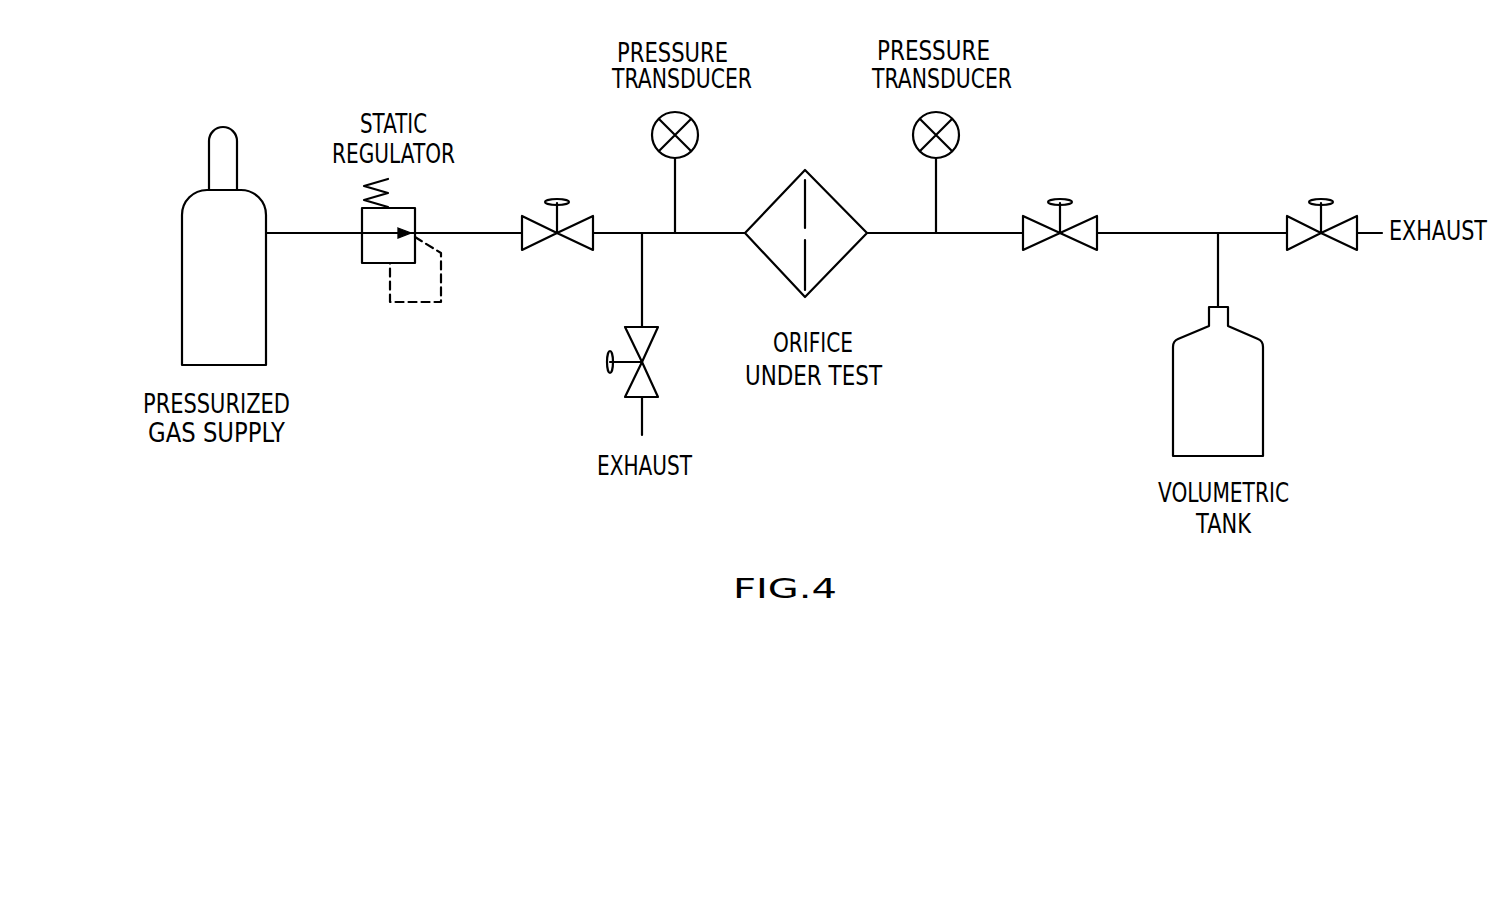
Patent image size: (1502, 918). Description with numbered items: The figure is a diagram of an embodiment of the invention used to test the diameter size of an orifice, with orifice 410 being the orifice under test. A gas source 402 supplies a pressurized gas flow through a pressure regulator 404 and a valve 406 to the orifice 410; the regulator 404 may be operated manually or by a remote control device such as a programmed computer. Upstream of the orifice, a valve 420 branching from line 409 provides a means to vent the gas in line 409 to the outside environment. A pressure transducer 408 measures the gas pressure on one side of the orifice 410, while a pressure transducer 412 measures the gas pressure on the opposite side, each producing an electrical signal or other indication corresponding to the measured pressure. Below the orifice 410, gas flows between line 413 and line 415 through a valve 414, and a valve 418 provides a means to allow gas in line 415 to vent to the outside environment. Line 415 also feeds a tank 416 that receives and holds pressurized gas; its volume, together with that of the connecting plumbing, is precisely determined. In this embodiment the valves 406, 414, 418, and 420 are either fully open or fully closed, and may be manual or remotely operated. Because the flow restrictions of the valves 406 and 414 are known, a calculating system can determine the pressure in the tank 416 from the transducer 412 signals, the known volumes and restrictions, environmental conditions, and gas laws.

The gas source 402 is at (248, 187).
The pressure regulator 404 is at (417, 223).
The valve 406 is at (550, 197).
The pressure transducer 408 is at (700, 130).
The line 409 is at (698, 232).
The orifice 410 is at (845, 257).
The pressure transducer 412 is at (960, 130).
The line 413 is at (978, 230).
The valve 414 is at (1070, 200).
The line 415 is at (1178, 230).
The tank 416 is at (1263, 390).
The valve 418 is at (1317, 198).
The valve 420 is at (605, 372).